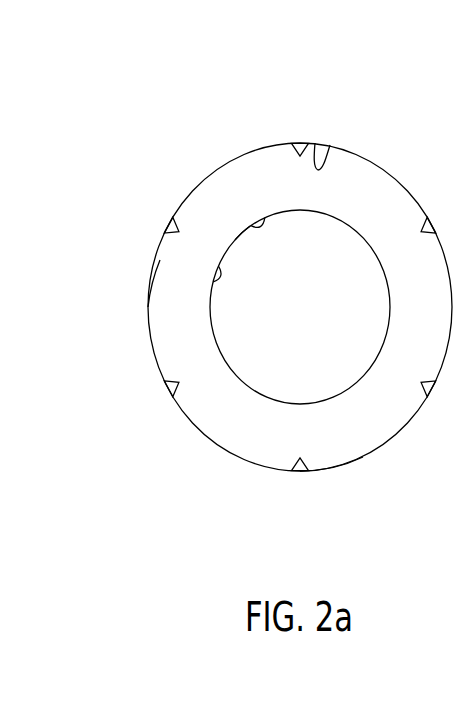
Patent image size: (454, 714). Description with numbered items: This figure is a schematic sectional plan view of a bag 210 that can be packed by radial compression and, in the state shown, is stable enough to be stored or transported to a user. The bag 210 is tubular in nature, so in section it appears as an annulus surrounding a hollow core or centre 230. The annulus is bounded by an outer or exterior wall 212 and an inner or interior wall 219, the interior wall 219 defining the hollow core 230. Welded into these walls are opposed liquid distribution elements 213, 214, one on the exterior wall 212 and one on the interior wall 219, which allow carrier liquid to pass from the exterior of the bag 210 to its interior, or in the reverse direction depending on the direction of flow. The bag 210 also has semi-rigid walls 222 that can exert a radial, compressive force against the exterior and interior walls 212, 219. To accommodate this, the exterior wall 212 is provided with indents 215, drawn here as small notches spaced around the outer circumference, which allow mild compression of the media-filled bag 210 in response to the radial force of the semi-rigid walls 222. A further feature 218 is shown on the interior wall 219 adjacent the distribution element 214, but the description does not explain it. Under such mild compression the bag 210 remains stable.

The bag 210 is at (128, 358).
The exterior wall 212 is at (158, 283).
The liquid distribution element 213 is at (330, 145).
The liquid distribution element 214 is at (250, 222).
The indents 215 is at (298, 462).
The second inner recess 218 is at (212, 284).
The interior wall 219 is at (235, 240).
The semi-rigid walls 222 is at (363, 457).
The hollow core 230 is at (335, 252).